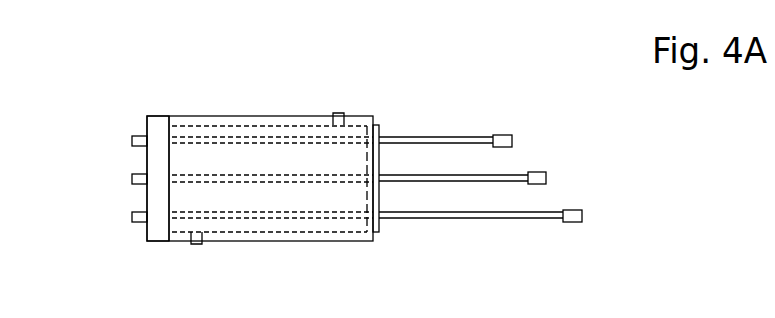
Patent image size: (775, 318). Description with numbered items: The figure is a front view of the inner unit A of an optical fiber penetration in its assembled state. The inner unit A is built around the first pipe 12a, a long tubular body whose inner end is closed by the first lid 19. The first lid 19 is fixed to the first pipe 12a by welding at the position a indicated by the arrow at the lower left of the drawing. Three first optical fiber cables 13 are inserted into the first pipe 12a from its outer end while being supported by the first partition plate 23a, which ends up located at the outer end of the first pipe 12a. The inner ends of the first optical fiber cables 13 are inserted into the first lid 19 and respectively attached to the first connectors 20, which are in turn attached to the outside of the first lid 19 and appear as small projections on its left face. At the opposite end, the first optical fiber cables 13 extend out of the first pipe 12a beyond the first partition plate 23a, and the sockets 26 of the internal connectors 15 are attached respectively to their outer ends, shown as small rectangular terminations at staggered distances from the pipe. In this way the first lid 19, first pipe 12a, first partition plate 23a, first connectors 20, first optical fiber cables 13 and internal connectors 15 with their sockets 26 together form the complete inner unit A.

The first pipe 12a is at (280, 115).
The first lid 19 is at (157, 121).
The first connectors 20 is at (138, 134).
The first partition plate 23a is at (381, 127).
The first optical fiber cables 13 is at (417, 136).
The internal connectors 15 is at (536, 153).
The sockets 26 is at (500, 134).
The welding position a is at (171, 243).
The inner unit A is at (643, 200).